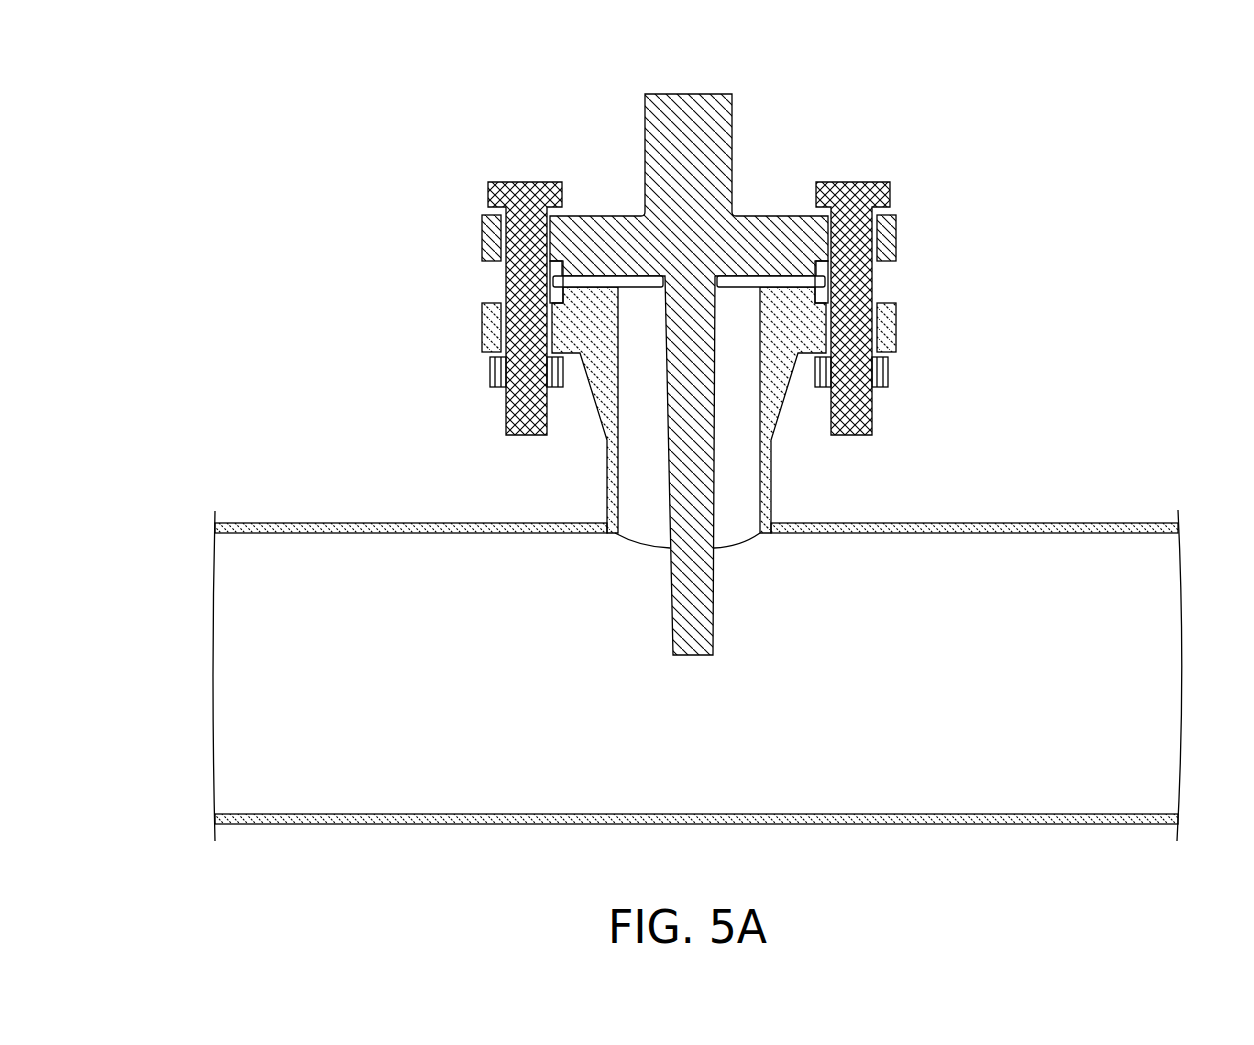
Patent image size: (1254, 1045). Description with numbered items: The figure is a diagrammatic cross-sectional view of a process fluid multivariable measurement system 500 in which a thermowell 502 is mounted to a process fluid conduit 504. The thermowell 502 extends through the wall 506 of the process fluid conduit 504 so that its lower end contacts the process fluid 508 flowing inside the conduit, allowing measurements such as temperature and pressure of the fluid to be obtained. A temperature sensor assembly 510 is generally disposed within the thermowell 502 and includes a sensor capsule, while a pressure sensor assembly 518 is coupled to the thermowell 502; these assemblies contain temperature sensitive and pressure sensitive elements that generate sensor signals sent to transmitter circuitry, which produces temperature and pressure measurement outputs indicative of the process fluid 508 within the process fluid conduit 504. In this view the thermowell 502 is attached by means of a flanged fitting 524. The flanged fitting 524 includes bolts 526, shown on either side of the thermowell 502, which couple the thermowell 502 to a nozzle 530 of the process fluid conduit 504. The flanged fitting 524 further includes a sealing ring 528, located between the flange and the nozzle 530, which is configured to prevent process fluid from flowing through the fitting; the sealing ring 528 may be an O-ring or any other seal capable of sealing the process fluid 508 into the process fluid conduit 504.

The process fluid multivariable measurement system 500 is at (148, 97).
The thermowell 502 is at (645, 130).
The process fluid conduit 504 is at (731, 650).
The wall 506 is at (1030, 522).
The process fluid 508 is at (278, 571).
The temperature sensor assembly 510 is at (561, 490).
The pressure sensor assembly 518 is at (670, 517).
The flanged fitting 524 is at (722, 354).
The bolts 526 is at (527, 182).
The sealing ring 528 is at (824, 281).
The nozzle 530 is at (770, 483).